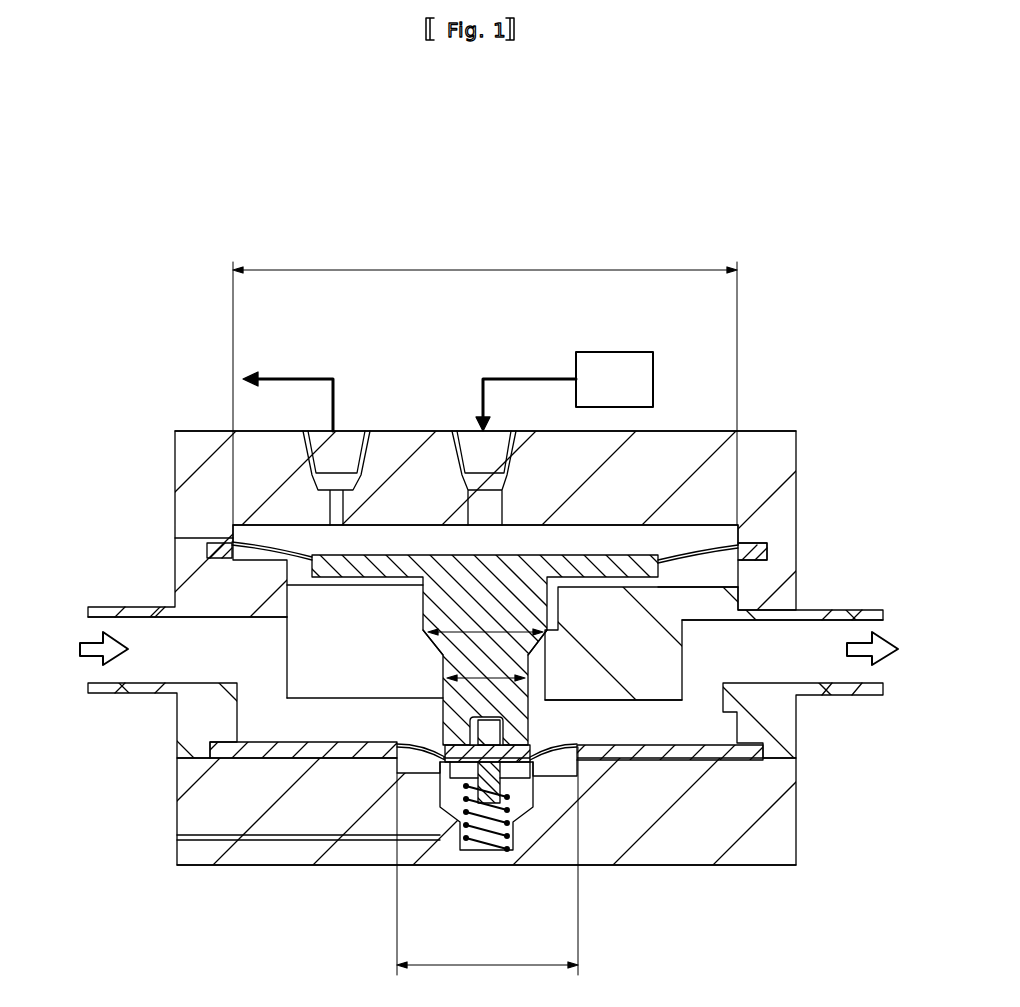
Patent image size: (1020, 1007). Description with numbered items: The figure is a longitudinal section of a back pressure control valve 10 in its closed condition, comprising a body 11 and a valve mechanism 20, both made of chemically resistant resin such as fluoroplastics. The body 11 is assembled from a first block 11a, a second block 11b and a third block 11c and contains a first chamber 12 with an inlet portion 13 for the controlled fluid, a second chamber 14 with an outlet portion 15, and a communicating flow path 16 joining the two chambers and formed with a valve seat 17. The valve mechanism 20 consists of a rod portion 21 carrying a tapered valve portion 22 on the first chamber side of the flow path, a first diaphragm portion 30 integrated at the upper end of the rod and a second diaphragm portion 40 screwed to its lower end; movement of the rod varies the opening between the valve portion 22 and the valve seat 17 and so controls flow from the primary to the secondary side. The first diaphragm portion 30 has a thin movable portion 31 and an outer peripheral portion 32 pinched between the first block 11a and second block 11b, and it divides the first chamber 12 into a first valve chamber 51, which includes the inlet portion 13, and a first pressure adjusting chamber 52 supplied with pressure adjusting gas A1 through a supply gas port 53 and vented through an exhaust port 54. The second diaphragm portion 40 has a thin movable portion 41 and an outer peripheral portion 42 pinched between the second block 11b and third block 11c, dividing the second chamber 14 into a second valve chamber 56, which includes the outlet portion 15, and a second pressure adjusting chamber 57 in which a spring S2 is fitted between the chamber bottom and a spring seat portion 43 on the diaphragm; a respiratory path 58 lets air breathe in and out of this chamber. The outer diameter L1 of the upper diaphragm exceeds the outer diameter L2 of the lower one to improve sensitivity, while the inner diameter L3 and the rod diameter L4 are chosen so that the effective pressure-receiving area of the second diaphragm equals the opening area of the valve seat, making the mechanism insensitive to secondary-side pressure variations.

The back pressure control valve 10 is at (186, 428).
The body 11 is at (800, 440).
The first block 11a is at (177, 462).
The second block 11b is at (786, 731).
The third block 11c is at (197, 857).
The first chamber 12 is at (240, 553).
The inlet portion 13 is at (265, 625).
The second chamber 14 is at (667, 742).
The outlet portion 15 is at (698, 700).
The communicating flow path 16 is at (438, 725).
The valve seat 17 is at (420, 658).
The valve mechanism 20 is at (295, 857).
The rod portion 21 is at (435, 608).
The valve portion 22 is at (548, 640).
The first diaphragm portion 30 is at (388, 553).
The thin movable portion 31 is at (687, 548).
The outer peripheral portion 32 is at (738, 563).
The second diaphragm portion 40 is at (722, 760).
The thin movable portion 41 is at (540, 756).
The outer peripheral portion 42 is at (225, 753).
The spring seat portion 43 is at (504, 779).
The first valve chamber 51 is at (590, 588).
The first pressure adjusting chamber 52 is at (522, 537).
The supply gas port 53 is at (482, 447).
The exhaust port 54 is at (330, 447).
The second valve chamber 56 is at (650, 708).
The second pressure adjusting chamber 57 is at (426, 767).
The respiratory path 58 is at (210, 833).
The pressure adjusting gas A1 is at (609, 368).
The spring S2 is at (467, 850).
The outer diameter of the thin movable portion of the first diaphragm L1 is at (485, 384).
The outer diameter of the thin movable portion of the second diaphragm L2 is at (487, 861).
The inner diameter of the thin movable portion L3 is at (486, 667).
The diameter of rod portion L4 is at (485, 621).